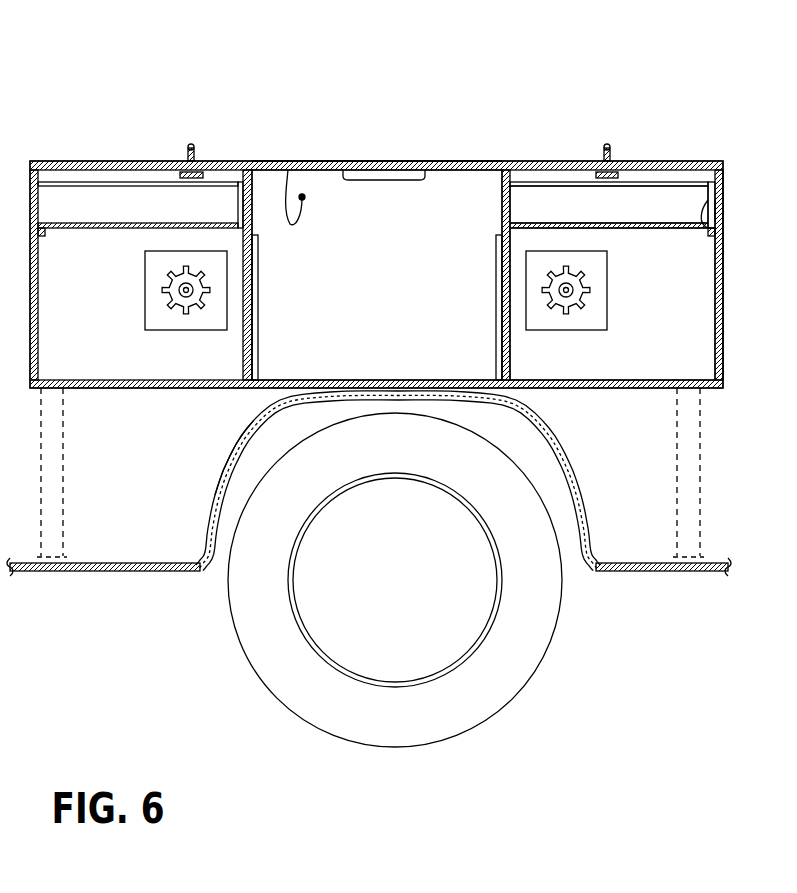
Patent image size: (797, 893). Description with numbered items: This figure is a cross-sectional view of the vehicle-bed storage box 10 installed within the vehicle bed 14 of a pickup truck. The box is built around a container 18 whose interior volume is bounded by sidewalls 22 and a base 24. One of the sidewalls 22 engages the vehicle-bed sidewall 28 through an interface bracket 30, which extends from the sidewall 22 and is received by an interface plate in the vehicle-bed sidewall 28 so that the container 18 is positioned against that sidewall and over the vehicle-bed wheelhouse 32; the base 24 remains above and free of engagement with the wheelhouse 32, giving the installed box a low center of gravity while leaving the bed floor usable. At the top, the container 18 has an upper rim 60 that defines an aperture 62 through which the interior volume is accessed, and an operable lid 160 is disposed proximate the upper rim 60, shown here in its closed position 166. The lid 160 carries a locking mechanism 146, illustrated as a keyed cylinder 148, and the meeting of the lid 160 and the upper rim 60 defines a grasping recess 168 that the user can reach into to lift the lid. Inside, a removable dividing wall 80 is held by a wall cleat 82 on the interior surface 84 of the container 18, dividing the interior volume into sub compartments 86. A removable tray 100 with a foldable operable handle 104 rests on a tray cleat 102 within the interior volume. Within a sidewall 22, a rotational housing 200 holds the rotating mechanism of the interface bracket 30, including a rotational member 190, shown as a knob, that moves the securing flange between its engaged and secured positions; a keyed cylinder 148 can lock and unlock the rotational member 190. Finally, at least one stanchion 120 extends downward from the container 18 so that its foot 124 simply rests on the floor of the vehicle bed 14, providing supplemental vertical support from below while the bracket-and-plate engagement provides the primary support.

The vehicle-bed storage box 10 is at (500, 102).
The vehicle bed 14 is at (132, 549).
The container 18 is at (723, 326).
The sidewalls 22 is at (723, 211).
The base 24 is at (594, 390).
The vehicle-bed sidewall 28 is at (623, 508).
The interface bracket 30 is at (575, 317).
The vehicle-bed wheelhouse 32 is at (226, 461).
The upper rim 60 is at (30, 166).
The aperture 62 is at (700, 172).
The removable dividing wall 80 is at (500, 270).
The wall cleat 82 is at (250, 378).
The interior surface 84 is at (356, 277).
The sub compartments 86 is at (668, 286).
The removable tray 100 is at (555, 202).
The tray cleat 102 is at (700, 216).
The operable handle 104 is at (70, 182).
The stanchion 120 is at (700, 456).
The foot 124 is at (705, 558).
The locking mechanism 146 is at (190, 146).
The keyed cylinder 148 is at (182, 292).
The operable lid 160 is at (100, 162).
The closed position 166 is at (432, 158).
The grasping recess 168 is at (368, 176).
The rotational member 190 is at (163, 287).
The rotational housing 200 is at (203, 263).